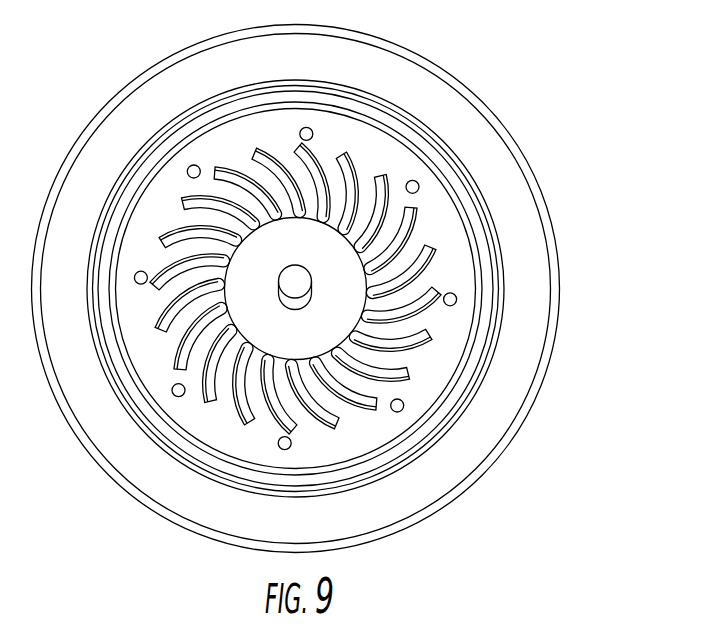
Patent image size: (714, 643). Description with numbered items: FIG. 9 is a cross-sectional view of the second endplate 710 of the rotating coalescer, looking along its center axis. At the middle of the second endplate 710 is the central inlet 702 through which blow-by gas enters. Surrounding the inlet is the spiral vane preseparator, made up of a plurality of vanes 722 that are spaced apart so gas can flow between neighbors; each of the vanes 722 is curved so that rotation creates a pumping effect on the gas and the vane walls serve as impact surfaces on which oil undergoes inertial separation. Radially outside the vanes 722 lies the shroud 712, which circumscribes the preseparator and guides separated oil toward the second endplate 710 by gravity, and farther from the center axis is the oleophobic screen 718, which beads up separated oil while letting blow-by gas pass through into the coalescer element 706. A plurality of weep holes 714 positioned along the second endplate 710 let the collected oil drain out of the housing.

The central inlet 702 is at (341, 336).
The coalescer element 706 is at (504, 188).
The second endplate 710 is at (539, 370).
The shroud 712 is at (473, 240).
The weep hole 714 is at (172, 392).
The oleophobic screen 718 is at (500, 275).
The vanes 722 is at (338, 424).